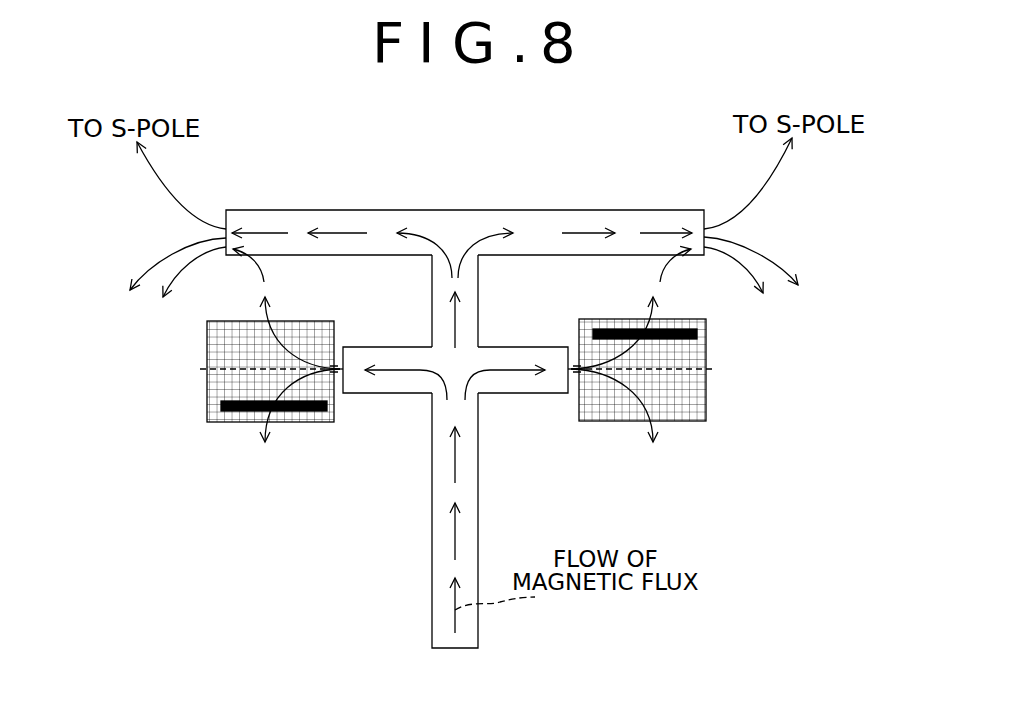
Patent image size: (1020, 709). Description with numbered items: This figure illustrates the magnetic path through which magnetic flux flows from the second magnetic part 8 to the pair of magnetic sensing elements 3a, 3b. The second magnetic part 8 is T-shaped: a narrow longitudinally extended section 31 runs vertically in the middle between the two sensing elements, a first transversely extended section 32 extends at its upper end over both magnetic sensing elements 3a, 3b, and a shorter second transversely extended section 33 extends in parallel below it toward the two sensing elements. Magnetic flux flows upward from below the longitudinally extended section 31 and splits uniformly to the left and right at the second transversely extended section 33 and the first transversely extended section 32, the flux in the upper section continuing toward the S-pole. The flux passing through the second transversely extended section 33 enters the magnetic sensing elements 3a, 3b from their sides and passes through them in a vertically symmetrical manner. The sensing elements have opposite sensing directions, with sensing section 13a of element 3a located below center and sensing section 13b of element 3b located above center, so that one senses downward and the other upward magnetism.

The second magnetic part 8 is at (557, 222).
The longitudinally extended section 31 is at (437, 583).
The first transversely extended section 32 is at (398, 220).
The second transversely extended section 33 is at (395, 387).
The magnetic sensing element 3a is at (207, 347).
The magnetic sensing element 3b is at (707, 387).
The sensing section 13a is at (207, 402).
The sensing section 13b is at (707, 332).